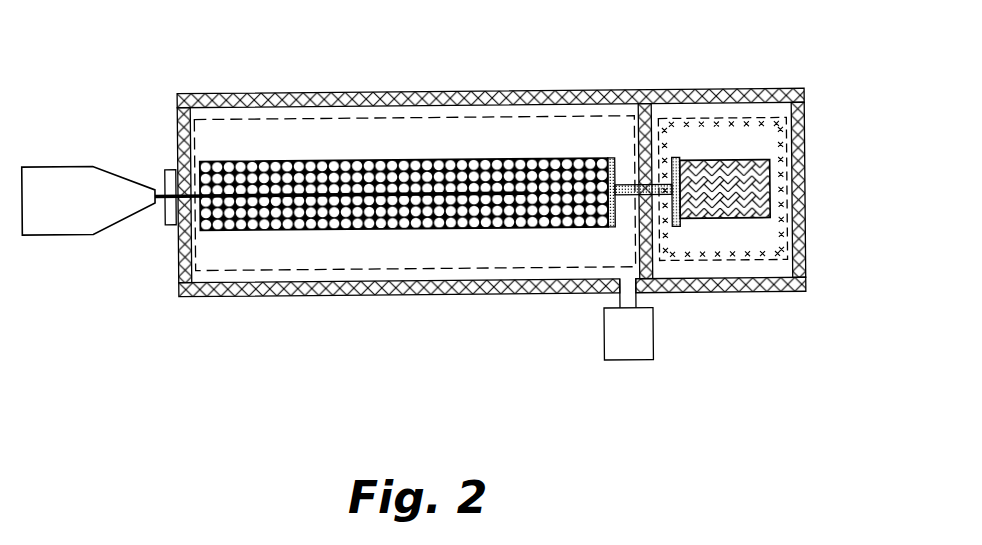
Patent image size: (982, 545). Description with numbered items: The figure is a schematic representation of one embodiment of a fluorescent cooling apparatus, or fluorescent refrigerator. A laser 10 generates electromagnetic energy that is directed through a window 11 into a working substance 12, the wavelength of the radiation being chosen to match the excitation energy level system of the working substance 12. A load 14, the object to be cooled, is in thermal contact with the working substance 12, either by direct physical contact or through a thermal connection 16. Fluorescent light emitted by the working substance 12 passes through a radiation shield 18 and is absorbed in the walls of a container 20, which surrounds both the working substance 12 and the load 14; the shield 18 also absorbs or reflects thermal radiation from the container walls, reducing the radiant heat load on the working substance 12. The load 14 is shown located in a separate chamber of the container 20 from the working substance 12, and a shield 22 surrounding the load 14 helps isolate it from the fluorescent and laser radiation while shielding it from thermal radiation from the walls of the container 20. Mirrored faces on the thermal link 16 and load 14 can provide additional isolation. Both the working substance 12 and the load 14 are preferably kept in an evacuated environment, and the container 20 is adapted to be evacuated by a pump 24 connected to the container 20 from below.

The laser 10 is at (93, 233).
The window 11 is at (163, 174).
The working substance 12 is at (275, 166).
The load 14 is at (734, 162).
The thermal connection 16 is at (622, 198).
The radiation shield 18 is at (608, 111).
The container 20 is at (380, 295).
The shield 22 is at (788, 203).
The pump / controller box 24 is at (640, 347).